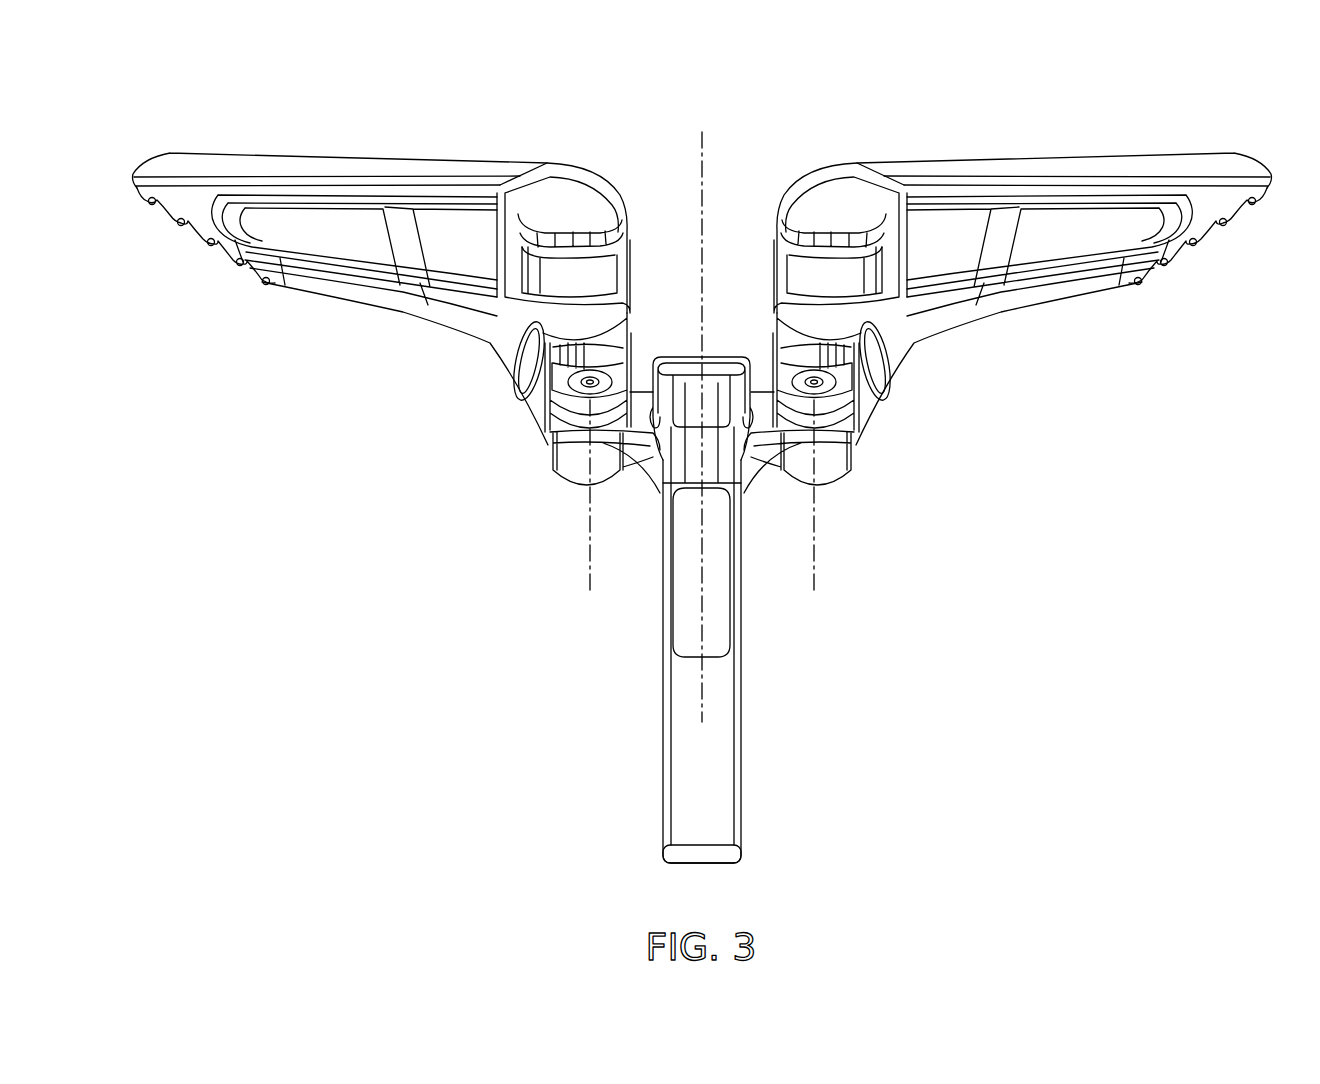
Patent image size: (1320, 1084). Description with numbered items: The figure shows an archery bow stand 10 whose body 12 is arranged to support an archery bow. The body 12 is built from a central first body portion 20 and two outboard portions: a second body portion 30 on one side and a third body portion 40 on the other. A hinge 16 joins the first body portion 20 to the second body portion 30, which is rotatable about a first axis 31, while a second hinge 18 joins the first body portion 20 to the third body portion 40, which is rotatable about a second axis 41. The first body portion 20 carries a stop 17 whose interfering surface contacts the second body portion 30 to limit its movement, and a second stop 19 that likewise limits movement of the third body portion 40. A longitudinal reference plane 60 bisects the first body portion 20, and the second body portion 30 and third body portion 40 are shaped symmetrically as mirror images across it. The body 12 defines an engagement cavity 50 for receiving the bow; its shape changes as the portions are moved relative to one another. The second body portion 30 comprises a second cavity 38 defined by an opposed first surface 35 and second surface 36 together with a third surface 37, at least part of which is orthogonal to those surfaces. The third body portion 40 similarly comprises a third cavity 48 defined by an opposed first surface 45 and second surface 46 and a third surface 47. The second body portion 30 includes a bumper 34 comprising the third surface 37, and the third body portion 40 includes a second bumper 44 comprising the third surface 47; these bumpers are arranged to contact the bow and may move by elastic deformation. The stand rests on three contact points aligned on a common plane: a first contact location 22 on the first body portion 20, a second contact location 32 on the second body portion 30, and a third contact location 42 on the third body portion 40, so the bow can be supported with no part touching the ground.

The archery bow stand 10 is at (378, 106).
The body 12 is at (730, 661).
The hinge 16 is at (806, 427).
The stop 17 is at (828, 461).
The second hinge 18 is at (598, 427).
The second stop 19 is at (574, 461).
The first body portion 20 is at (720, 762).
The first contact location 22 is at (727, 863).
The second body portion 30 is at (1064, 272).
The first axis 31 is at (843, 505).
The second contact location 32 is at (1198, 247).
The bumper 34 is at (821, 238).
The first surface 35 is at (833, 228).
The second surface 36 is at (896, 358).
The third surface 37 is at (808, 279).
The second cavity 38 is at (906, 255).
The third body portion 40 is at (341, 272).
The second axis 41 is at (561, 505).
The third contact location 42 is at (206, 247).
The second bumper 44 is at (583, 238).
The first surface 45 is at (570, 229).
The second surface 46 is at (506, 358).
The third surface 47 is at (596, 279).
The third cavity 48 is at (496, 252).
The engagement cavity 50 is at (718, 346).
The longitudinal reference plane 60 is at (705, 150).